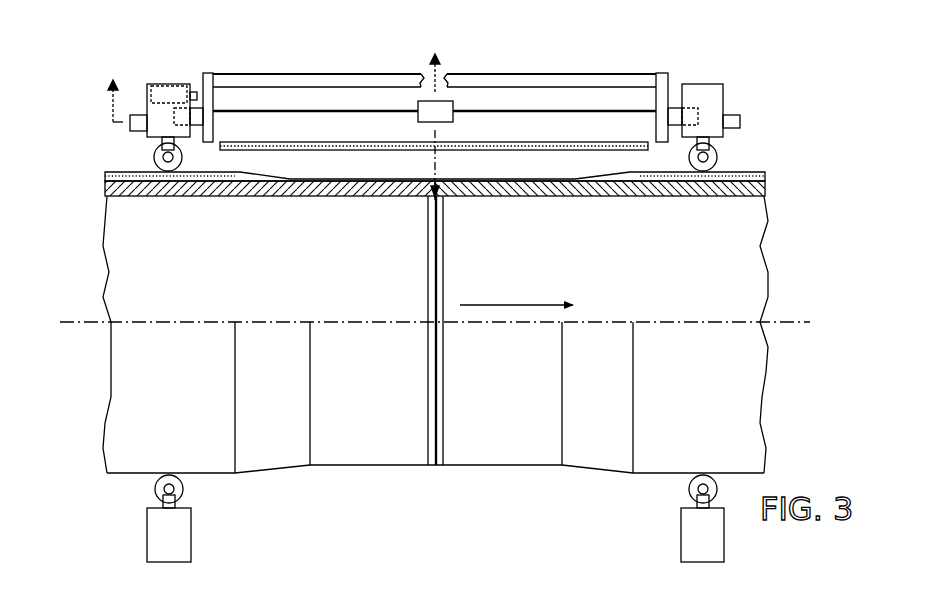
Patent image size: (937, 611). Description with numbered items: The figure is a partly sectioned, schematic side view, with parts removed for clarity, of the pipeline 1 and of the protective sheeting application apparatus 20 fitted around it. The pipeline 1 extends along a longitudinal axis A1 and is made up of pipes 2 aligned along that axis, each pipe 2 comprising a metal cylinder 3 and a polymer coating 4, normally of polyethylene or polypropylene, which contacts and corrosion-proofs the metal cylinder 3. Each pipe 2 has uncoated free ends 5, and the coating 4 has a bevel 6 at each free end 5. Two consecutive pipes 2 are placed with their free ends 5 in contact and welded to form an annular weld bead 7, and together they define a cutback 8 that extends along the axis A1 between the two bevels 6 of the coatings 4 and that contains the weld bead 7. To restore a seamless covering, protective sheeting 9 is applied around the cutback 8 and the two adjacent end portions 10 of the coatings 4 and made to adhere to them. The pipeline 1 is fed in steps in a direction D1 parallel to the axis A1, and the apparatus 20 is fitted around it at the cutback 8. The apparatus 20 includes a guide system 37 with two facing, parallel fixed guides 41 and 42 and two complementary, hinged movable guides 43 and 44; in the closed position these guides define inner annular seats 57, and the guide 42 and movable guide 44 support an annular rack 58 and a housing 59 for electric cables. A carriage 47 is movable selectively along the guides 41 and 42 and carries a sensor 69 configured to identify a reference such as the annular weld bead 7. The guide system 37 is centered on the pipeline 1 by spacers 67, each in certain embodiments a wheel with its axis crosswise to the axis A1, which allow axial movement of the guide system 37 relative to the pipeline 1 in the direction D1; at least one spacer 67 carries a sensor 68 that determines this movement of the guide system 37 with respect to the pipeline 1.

The pipeline 1 is at (815, 293).
The pipe 2 is at (88, 302).
The metal cylinder 3 is at (192, 196).
The polymer coating 4 is at (146, 196).
The free end 5 is at (406, 474).
The bevel 6 is at (252, 480).
The annular weld bead 7 is at (438, 470).
The cutback 8 is at (468, 475).
The protective sheeting 9 is at (478, 154).
The end portion 10 is at (210, 480).
The apparatus 20 is at (456, 75).
The guide system 37 is at (732, 92).
The guide 41 is at (710, 90).
The guide 42 is at (168, 115).
The movable guide 43 is at (703, 538).
The movable guide 44 is at (165, 532).
The carriage 47 is at (560, 64).
The inner annular seat 57 is at (190, 115).
The annular rack 58 is at (194, 90).
The housing 59 is at (160, 90).
The spacer 67 is at (150, 155).
The sensor 68 is at (138, 127).
The sensor 69 is at (437, 112).
The longitudinal axis A1 is at (712, 322).
The direction D1 is at (517, 272).